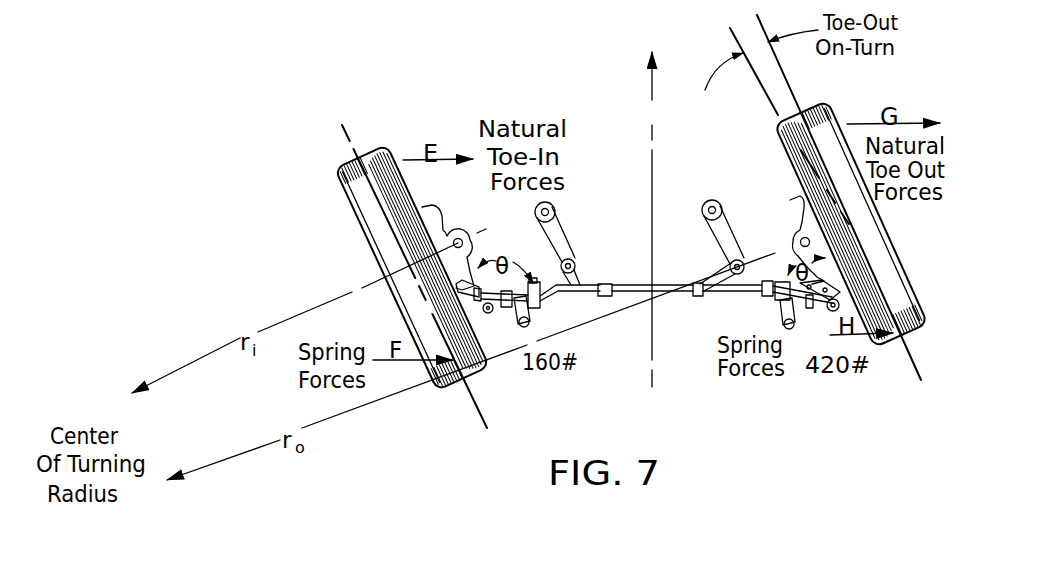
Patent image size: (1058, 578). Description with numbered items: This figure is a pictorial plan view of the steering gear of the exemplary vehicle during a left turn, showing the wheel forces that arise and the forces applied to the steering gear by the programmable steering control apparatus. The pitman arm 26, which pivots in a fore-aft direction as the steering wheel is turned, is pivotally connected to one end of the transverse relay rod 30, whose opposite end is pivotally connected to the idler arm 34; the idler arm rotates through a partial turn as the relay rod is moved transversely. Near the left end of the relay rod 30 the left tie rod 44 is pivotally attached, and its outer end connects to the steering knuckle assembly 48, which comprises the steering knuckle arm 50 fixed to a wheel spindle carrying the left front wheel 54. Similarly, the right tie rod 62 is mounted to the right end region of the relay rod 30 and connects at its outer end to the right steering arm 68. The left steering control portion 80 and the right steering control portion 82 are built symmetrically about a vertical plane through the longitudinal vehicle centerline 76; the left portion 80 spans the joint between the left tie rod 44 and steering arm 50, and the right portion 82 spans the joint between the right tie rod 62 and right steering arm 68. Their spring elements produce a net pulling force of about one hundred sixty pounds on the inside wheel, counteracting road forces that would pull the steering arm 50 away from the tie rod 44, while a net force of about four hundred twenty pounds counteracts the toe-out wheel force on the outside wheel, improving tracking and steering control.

The pitman arm 26 is at (562, 235).
The relay rod 30 is at (661, 281).
The idler arm 34 is at (728, 224).
The left tie rod 44 is at (586, 297).
The steering knuckle assembly 48 is at (468, 221).
The steering knuckle arm 50 is at (468, 288).
The left front wheel 54 is at (337, 178).
The right tie rod 62 is at (712, 294).
The right steering arm 68 is at (817, 277).
The longitudinal vehicle centerline 76 is at (650, 337).
The left steering control portion 80 is at (521, 265).
The right steering control portion 82 is at (780, 269).